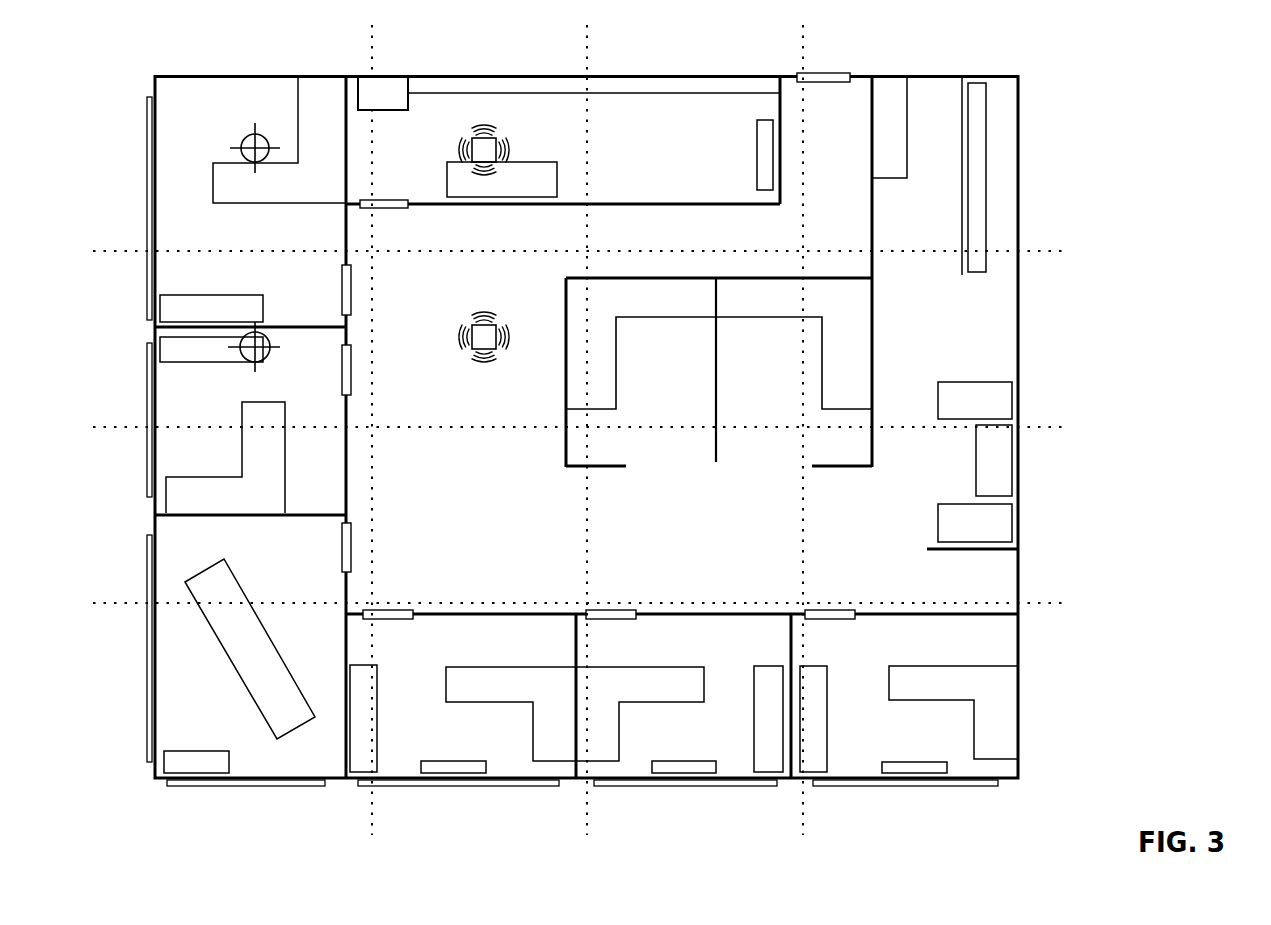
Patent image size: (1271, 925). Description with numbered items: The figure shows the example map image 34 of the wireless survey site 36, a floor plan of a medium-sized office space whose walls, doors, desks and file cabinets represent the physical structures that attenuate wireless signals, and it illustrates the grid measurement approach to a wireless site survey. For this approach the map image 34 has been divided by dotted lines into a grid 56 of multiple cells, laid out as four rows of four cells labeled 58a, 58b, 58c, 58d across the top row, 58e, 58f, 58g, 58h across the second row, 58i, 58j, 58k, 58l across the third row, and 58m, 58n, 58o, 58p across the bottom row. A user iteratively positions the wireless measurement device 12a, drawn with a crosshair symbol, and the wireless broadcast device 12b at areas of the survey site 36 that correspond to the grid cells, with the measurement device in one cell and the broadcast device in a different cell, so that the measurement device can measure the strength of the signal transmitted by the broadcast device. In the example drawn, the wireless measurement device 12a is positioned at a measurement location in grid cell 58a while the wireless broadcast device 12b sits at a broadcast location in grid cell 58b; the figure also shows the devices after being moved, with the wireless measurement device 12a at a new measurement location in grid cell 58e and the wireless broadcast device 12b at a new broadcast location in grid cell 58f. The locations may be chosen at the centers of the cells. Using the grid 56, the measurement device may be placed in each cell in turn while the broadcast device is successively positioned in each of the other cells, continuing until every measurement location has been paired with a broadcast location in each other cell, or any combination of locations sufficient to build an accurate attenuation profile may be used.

The map image 34 is at (90, 59).
The wireless survey site 36 is at (227, 67).
The grid 56 is at (98, 242).
The wireless measurement device 12a is at (245, 136).
The wireless broadcast device 12b is at (496, 138).
The grid cell 58a is at (230, 238).
The grid cell 58b is at (461, 238).
The grid cell 58c is at (672, 238).
The grid cell 58d is at (902, 238).
The grid cell 58e is at (186, 420).
The grid cell 58f is at (463, 420).
The grid cell 58g is at (671, 420).
The grid cell 58h is at (892, 420).
The grid cell 58i is at (300, 592).
The grid cell 58j is at (464, 594).
The grid cell 58k is at (672, 594).
The grid cell 58l is at (907, 594).
The grid cell 58m is at (292, 768).
The grid cell 58n is at (461, 752).
The grid cell 58o is at (671, 752).
The grid cell 58p is at (902, 752).